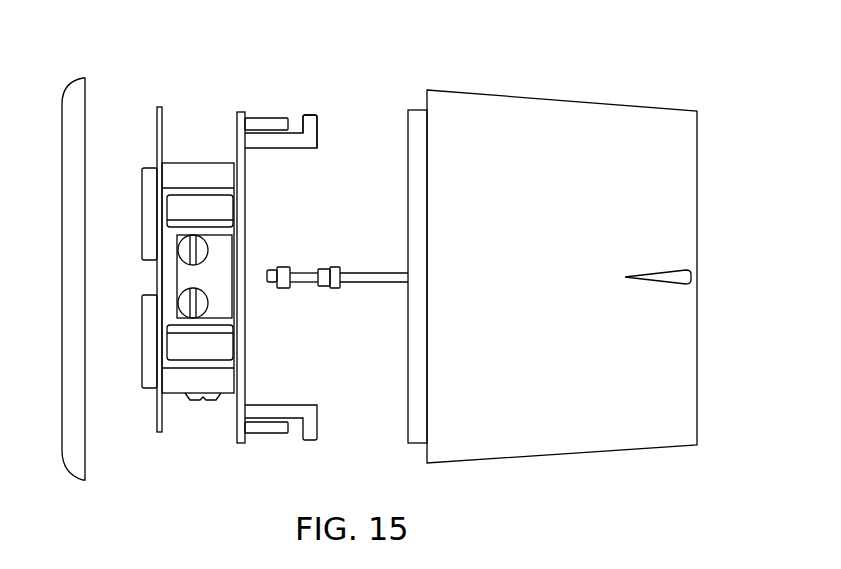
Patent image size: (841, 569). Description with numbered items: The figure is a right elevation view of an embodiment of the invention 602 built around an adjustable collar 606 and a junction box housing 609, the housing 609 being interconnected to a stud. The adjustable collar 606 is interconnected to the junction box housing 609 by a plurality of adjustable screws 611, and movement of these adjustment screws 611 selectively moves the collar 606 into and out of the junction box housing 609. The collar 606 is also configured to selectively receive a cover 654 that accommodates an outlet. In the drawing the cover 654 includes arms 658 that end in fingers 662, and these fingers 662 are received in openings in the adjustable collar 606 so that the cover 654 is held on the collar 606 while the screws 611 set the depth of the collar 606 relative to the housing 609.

The electrical connector assembly 602 is at (344, 78).
The cover 654 is at (237, 118).
The arms 658 is at (278, 142).
The fingers 662 is at (309, 116).
The adjustable screws 611 is at (336, 274).
The adjustable collar 606 is at (417, 403).
The junction box housing 609 is at (643, 138).